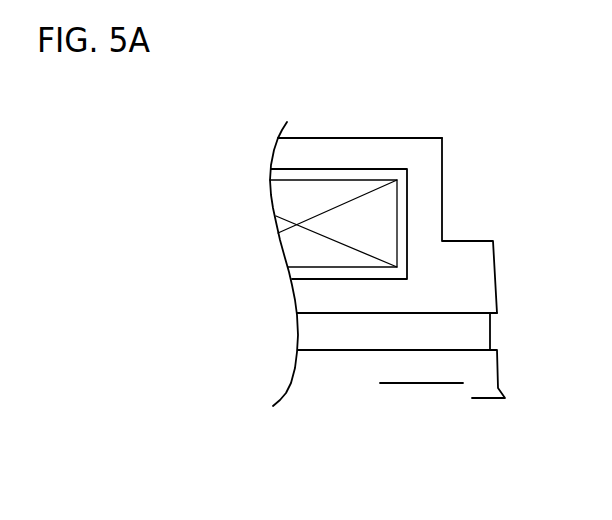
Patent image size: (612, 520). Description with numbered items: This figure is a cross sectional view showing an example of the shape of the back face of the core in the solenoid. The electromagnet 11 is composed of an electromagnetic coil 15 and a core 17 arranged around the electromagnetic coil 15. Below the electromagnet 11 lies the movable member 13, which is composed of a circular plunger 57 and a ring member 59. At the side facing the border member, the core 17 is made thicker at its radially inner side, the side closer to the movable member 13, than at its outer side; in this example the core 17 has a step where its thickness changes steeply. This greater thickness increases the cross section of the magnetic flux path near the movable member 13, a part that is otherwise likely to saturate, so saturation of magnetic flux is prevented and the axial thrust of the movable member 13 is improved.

The electromagnet 11 is at (332, 113).
The movable member 13 is at (356, 385).
The electromagnetic coil 15 is at (280, 197).
The core 17 is at (397, 138).
The circular plunger 57 is at (305, 330).
The ring member 59 is at (432, 375).